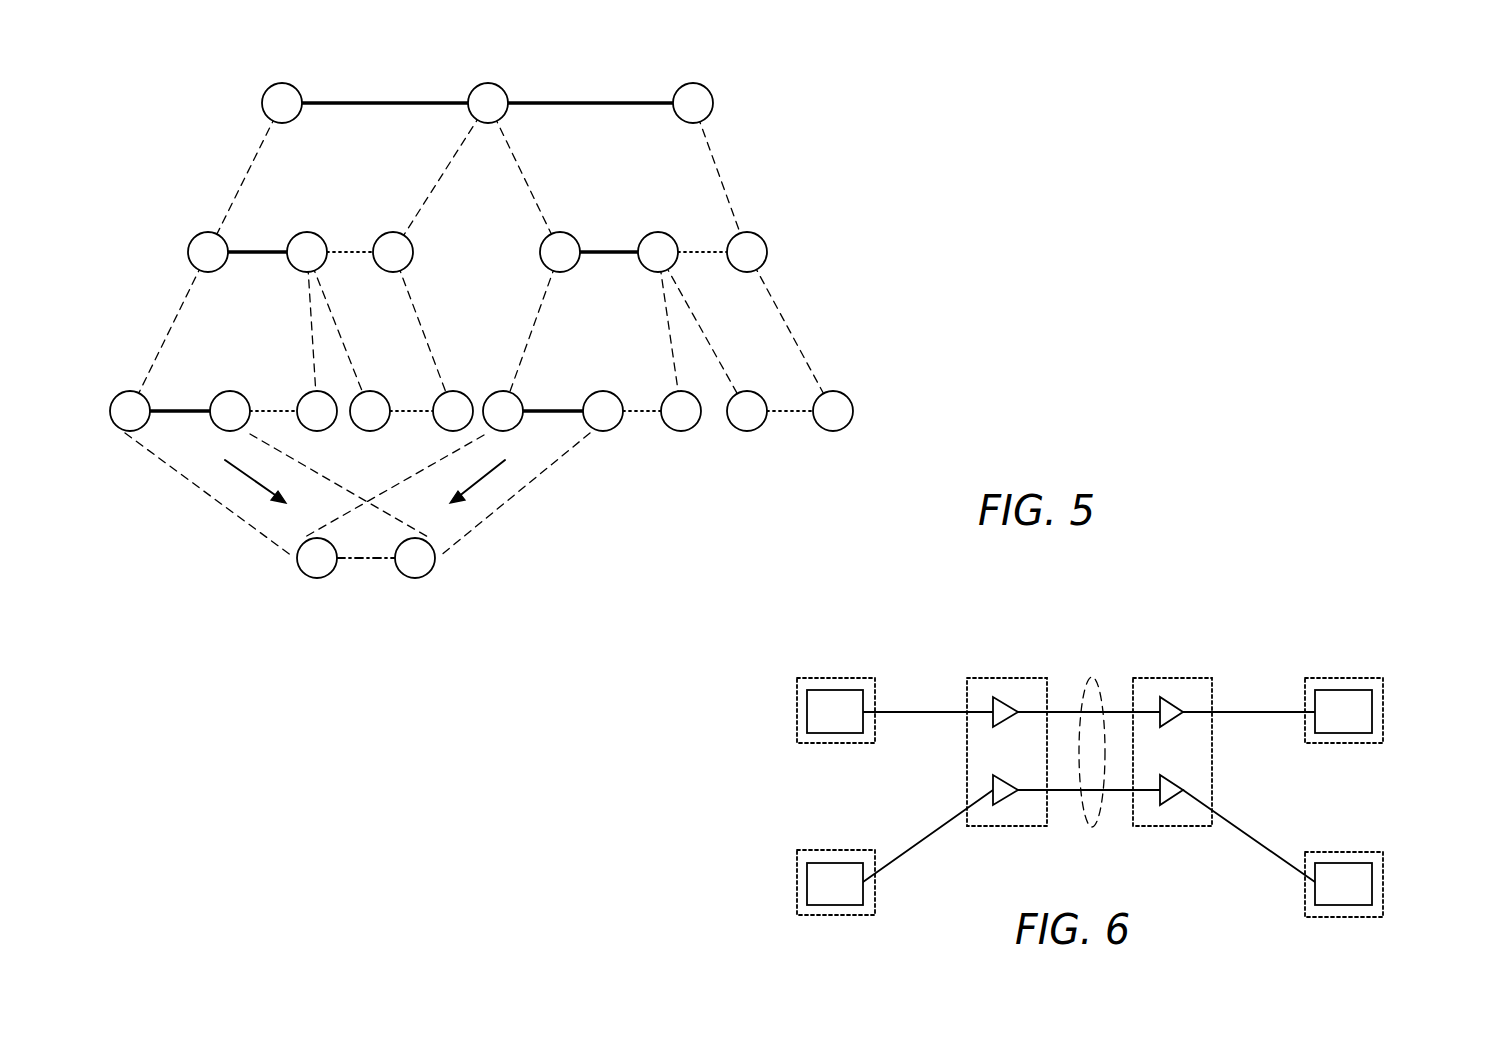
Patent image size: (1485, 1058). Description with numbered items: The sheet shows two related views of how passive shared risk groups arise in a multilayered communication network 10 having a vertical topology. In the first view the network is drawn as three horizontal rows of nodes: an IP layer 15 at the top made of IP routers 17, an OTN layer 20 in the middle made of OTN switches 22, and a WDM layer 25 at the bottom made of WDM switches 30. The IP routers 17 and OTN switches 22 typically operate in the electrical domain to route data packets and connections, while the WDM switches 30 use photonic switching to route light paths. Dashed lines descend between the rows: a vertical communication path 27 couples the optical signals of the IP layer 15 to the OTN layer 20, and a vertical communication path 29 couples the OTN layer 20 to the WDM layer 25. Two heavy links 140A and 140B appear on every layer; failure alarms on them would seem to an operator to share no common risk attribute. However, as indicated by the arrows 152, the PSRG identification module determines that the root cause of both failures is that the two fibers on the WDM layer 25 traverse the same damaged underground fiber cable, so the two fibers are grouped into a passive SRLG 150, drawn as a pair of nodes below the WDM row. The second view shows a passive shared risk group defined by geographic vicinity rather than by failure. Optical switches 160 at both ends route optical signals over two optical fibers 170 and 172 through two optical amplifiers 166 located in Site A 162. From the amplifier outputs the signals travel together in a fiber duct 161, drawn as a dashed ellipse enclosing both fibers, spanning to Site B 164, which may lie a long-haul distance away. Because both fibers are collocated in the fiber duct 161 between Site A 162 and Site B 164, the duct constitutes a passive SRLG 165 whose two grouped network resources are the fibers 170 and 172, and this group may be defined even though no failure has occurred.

In FIG. 5, the multilayered communication network 10 is at (160, 100).
In FIG. 5, the IP layer 15 is at (596, 79).
In FIG. 5, the IP routers 17 is at (712, 88).
In FIG. 5, the OTN layer 20 is at (589, 234).
In FIG. 5, the OTN switches 22 is at (762, 240).
In FIG. 5, the WDM layer 25 is at (565, 435).
In FIG. 5, the vertical communication path 27 is at (727, 175).
In FIG. 5, the vertical communication path 29 is at (780, 317).
In FIG. 5, the WDM switches 30 is at (833, 432).
In FIG. 5, the link 140A is at (350, 105).
In FIG. 5, the link 140B is at (590, 105).
In FIG. 5, the passive shared risk link group 150 is at (363, 562).
In FIG. 5, the arrows 152 is at (245, 474).
In FIG. 6, the optical switches 160 is at (795, 712).
In FIG. 6, the fiber duct 161 is at (1093, 845).
In FIG. 6, the Site A 162 is at (965, 750).
In FIG. 6, the Site B 164 is at (1213, 752).
In FIG. 6, the passive SRLG 165 is at (1093, 678).
In FIG. 6, the optical amplifiers 166 is at (1010, 697).
In FIG. 6, the optical fiber 170 is at (920, 708).
In FIG. 6, the optical fiber 172 is at (935, 835).